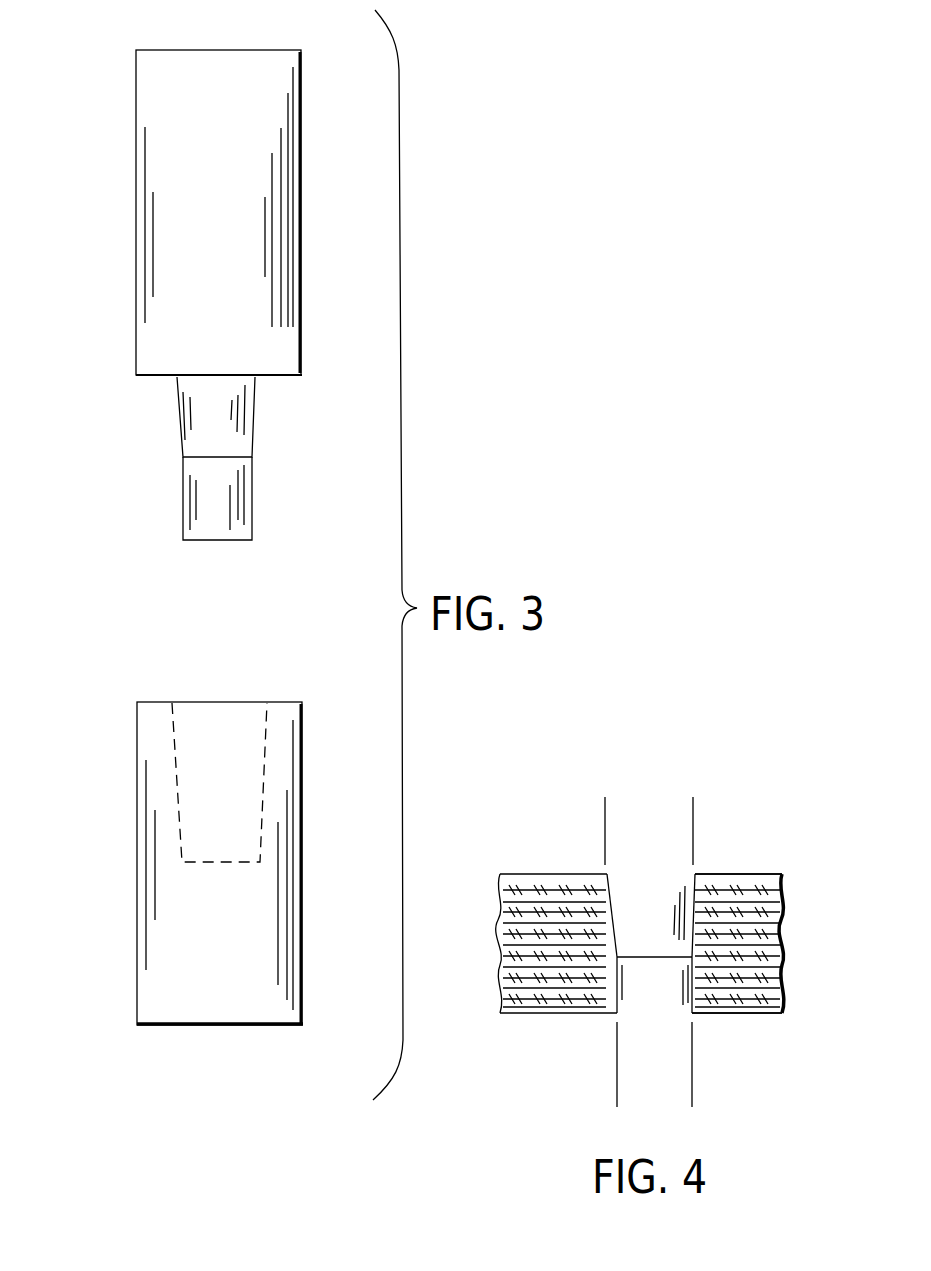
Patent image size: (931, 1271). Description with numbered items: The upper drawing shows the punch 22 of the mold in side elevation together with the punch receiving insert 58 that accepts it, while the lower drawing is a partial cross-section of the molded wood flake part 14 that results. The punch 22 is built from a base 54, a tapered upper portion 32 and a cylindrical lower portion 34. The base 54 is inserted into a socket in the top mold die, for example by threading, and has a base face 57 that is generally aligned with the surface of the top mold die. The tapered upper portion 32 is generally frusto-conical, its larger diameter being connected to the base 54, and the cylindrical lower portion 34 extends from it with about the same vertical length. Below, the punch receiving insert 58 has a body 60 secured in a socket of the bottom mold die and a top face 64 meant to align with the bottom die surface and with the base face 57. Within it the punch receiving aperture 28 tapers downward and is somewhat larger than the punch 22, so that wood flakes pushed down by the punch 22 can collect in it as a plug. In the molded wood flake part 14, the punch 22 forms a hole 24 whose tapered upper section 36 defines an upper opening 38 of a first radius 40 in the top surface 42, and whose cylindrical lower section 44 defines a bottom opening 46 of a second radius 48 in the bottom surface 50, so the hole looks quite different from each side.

In FIG. 4, the molded wood flake part 14 is at (542, 866).
In FIG. 3, the punch 22 is at (128, 213).
In FIG. 4, the hole 24 is at (633, 868).
In FIG. 3, the punch receiving aperture 28 is at (228, 730).
In FIG. 3, the tapered upper portion 32 is at (220, 430).
In FIG. 3, the cylindrical lower portion 34 is at (222, 487).
In FIG. 4, the tapered upper section 36 is at (622, 877).
In FIG. 4, the upper opening 38 is at (672, 874).
In FIG. 4, the first radius 40 is at (693, 809).
In FIG. 4, the top surface 42 is at (740, 874).
In FIG. 4, the cylindrical lower section 44 is at (640, 995).
In FIG. 4, the bottom opening 46 is at (657, 1016).
In FIG. 4, the second radius 48 is at (578, 1086).
In FIG. 4, the bottom surface 50 is at (733, 1013).
In FIG. 3, the base 54 is at (288, 213).
In FIG. 3, the base face 57 is at (273, 380).
In FIG. 3, the punch receiving insert 58 is at (314, 846).
In FIG. 3, the body 60 is at (290, 797).
In FIG. 3, the top face 64 is at (156, 702).